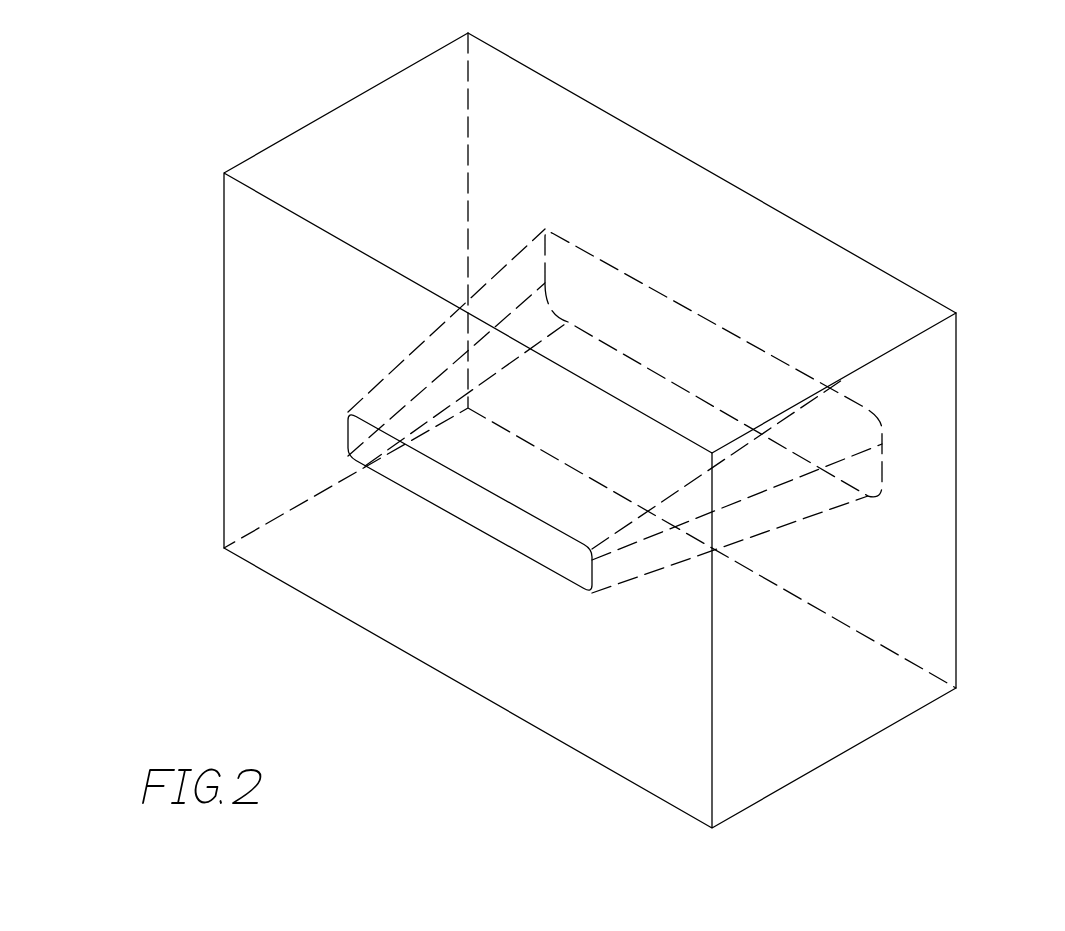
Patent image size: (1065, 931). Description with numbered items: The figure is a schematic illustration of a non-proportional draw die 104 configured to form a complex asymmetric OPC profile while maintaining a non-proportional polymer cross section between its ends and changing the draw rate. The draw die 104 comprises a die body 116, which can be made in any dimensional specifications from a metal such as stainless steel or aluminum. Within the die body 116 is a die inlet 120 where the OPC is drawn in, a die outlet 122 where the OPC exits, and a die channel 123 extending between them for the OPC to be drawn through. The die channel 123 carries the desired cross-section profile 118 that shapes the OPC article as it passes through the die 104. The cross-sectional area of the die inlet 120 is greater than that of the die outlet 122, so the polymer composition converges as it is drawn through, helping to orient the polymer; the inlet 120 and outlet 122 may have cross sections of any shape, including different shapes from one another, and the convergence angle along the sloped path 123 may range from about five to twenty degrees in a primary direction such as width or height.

The draw die 104 is at (143, 83).
The die body 116 is at (262, 399).
The cross-section profile 118 is at (791, 500).
The die inlet 120 is at (709, 345).
The die outlet 122 is at (435, 518).
The die channel 123 is at (722, 432).